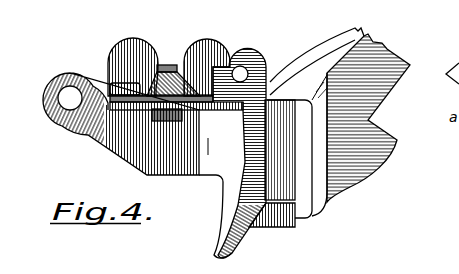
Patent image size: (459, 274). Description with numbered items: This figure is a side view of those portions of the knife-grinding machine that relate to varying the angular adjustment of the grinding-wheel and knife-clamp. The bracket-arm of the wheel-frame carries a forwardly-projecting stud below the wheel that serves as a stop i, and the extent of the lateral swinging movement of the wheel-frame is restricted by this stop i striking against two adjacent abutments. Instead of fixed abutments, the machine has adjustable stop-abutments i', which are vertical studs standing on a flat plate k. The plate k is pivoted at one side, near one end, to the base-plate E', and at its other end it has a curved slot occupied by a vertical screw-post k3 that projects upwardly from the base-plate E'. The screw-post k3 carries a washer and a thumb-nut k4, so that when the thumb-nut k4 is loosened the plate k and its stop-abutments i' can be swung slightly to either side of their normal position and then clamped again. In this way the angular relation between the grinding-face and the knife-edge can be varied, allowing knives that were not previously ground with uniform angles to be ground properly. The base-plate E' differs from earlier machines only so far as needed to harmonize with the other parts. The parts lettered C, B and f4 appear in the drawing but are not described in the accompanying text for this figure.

The pawl lever body C is at (135, 163).
The base-plate E' is at (167, 114).
The flat plate k is at (127, 107).
The thumb-nut k4 is at (169, 57).
The vertical screw-post k3 is at (171, 65).
The stop i is at (125, 85).
The stop-abutment i' is at (103, 83).
The frame rail B is at (306, 127).
The frame bracket f4 is at (397, 142).